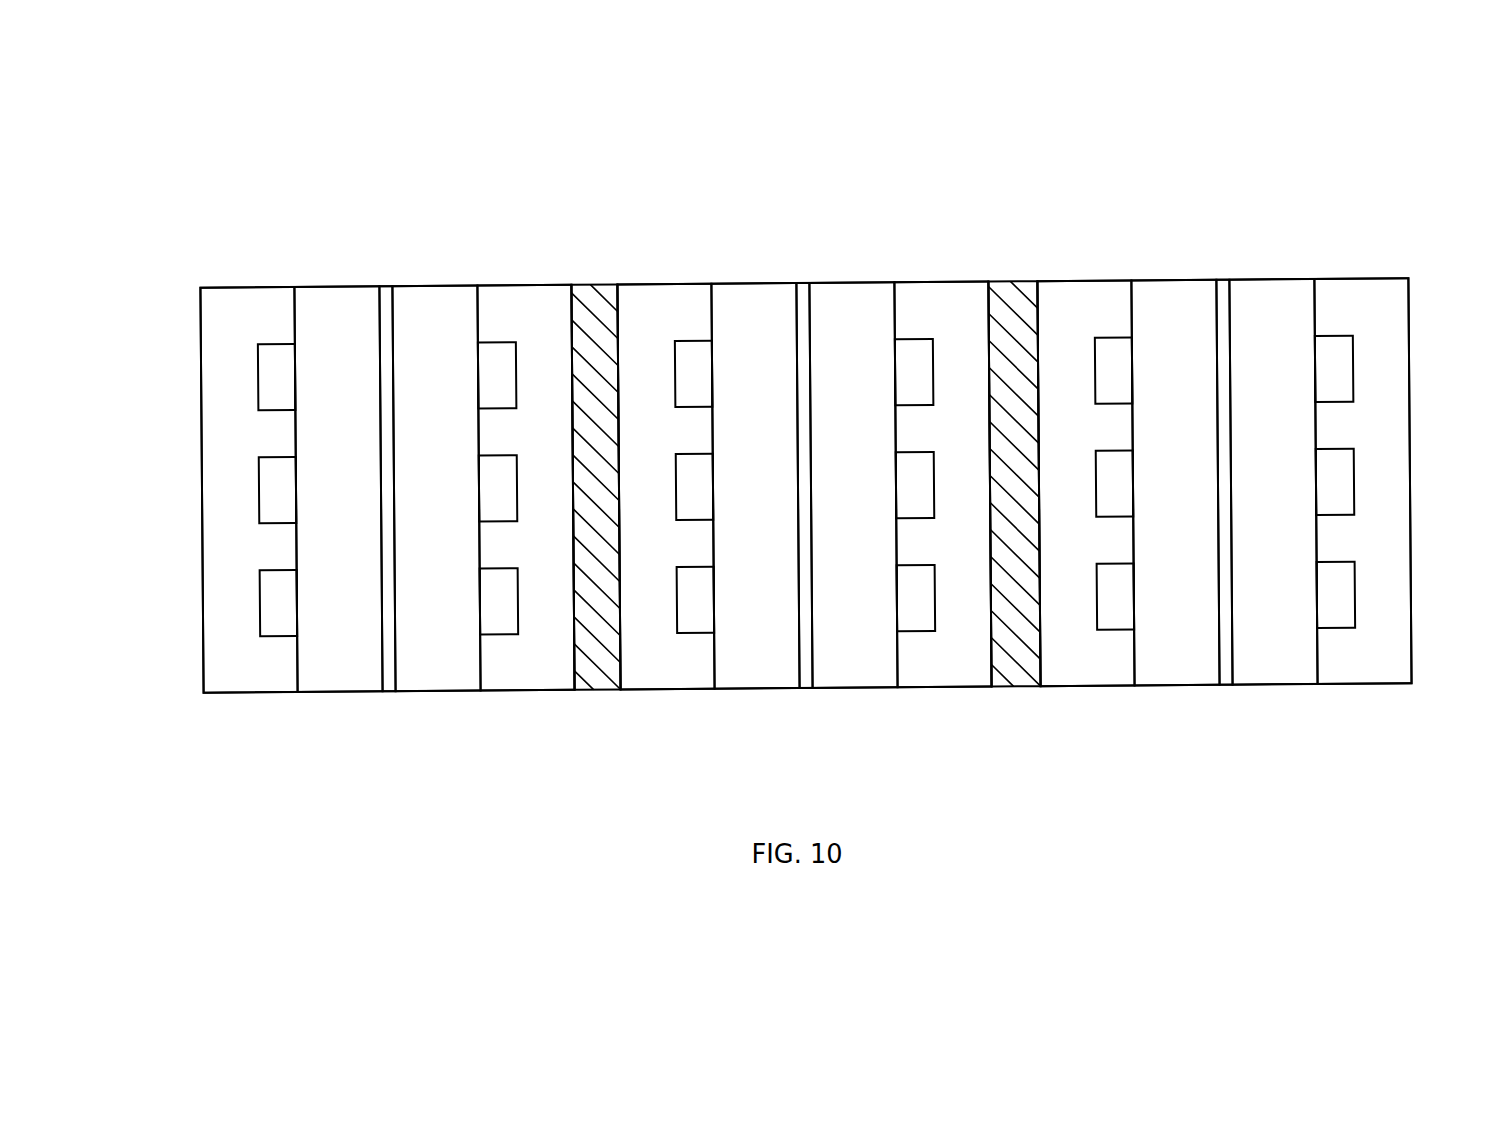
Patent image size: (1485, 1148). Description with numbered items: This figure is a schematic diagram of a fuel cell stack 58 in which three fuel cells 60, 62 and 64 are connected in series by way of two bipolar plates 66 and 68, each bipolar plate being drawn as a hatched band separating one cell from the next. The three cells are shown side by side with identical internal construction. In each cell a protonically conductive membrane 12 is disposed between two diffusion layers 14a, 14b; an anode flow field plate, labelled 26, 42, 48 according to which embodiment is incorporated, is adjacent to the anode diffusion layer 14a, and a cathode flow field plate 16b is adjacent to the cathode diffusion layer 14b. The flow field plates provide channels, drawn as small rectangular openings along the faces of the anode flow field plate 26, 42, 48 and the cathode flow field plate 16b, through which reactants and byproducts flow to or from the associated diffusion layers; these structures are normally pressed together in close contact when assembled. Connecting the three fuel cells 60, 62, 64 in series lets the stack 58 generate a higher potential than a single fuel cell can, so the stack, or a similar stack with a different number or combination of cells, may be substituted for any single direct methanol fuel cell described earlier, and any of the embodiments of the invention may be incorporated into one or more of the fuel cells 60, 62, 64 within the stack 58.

The fuel cell stack 58 is at (1358, 148).
The fuel cell 60 is at (572, 274).
The fuel cell 62 is at (989, 274).
The fuel cell 64 is at (1409, 274).
The bipolar plate 66 is at (575, 688).
The bipolar plate 68 is at (1000, 688).
The protonically conductive membrane 12 is at (395, 688).
The diffusion layer 14a is at (344, 688).
The diffusion layer 14b is at (447, 688).
The cathode flow field plate 16b is at (524, 688).
The anode flow field plate 26 is at (646, 527).
The anode flow field plate 42 is at (646, 527).
The anode flow field plate 48 is at (234, 688).